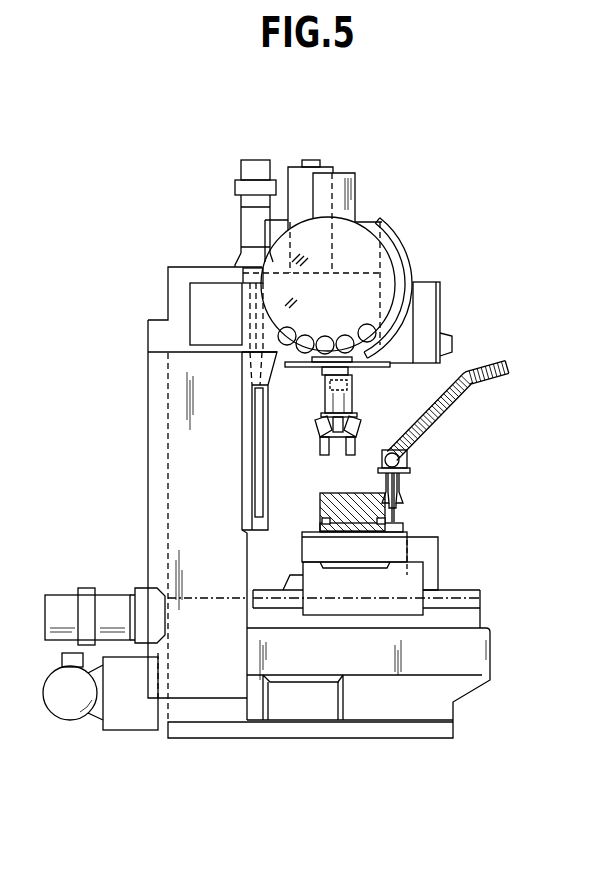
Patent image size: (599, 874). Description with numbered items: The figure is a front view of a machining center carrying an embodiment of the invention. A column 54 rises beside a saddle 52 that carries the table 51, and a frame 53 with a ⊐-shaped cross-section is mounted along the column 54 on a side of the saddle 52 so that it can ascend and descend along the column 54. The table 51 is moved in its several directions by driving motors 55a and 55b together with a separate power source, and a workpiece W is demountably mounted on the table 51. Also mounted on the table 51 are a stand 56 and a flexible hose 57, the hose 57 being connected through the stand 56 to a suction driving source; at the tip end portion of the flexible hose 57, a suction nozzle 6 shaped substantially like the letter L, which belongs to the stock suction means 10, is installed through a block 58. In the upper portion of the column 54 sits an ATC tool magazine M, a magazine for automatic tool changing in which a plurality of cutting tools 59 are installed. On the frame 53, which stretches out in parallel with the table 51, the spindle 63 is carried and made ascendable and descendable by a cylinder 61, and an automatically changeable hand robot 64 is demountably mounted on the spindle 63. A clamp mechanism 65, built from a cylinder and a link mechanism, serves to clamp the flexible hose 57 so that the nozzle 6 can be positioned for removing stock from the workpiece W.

The cylinder 61 is at (307, 173).
The ATC tool magazine M is at (345, 228).
The cutting tools 59 is at (366, 326).
The frame 53 is at (423, 290).
The spindle 63 is at (388, 361).
The hand robot 64 is at (352, 397).
The clamp mechanism 65 is at (313, 436).
The flexible hose 57 is at (460, 402).
The block 58 is at (417, 447).
The column 54 is at (165, 475).
The stock suction means 10 is at (413, 468).
The workpiece W is at (410, 487).
The suction nozzle 6 is at (403, 500).
The driving motor 55a is at (85, 588).
The driving motor 55b is at (65, 723).
The stand 56 is at (405, 516).
The table 51 is at (405, 550).
The saddle 52 is at (413, 578).